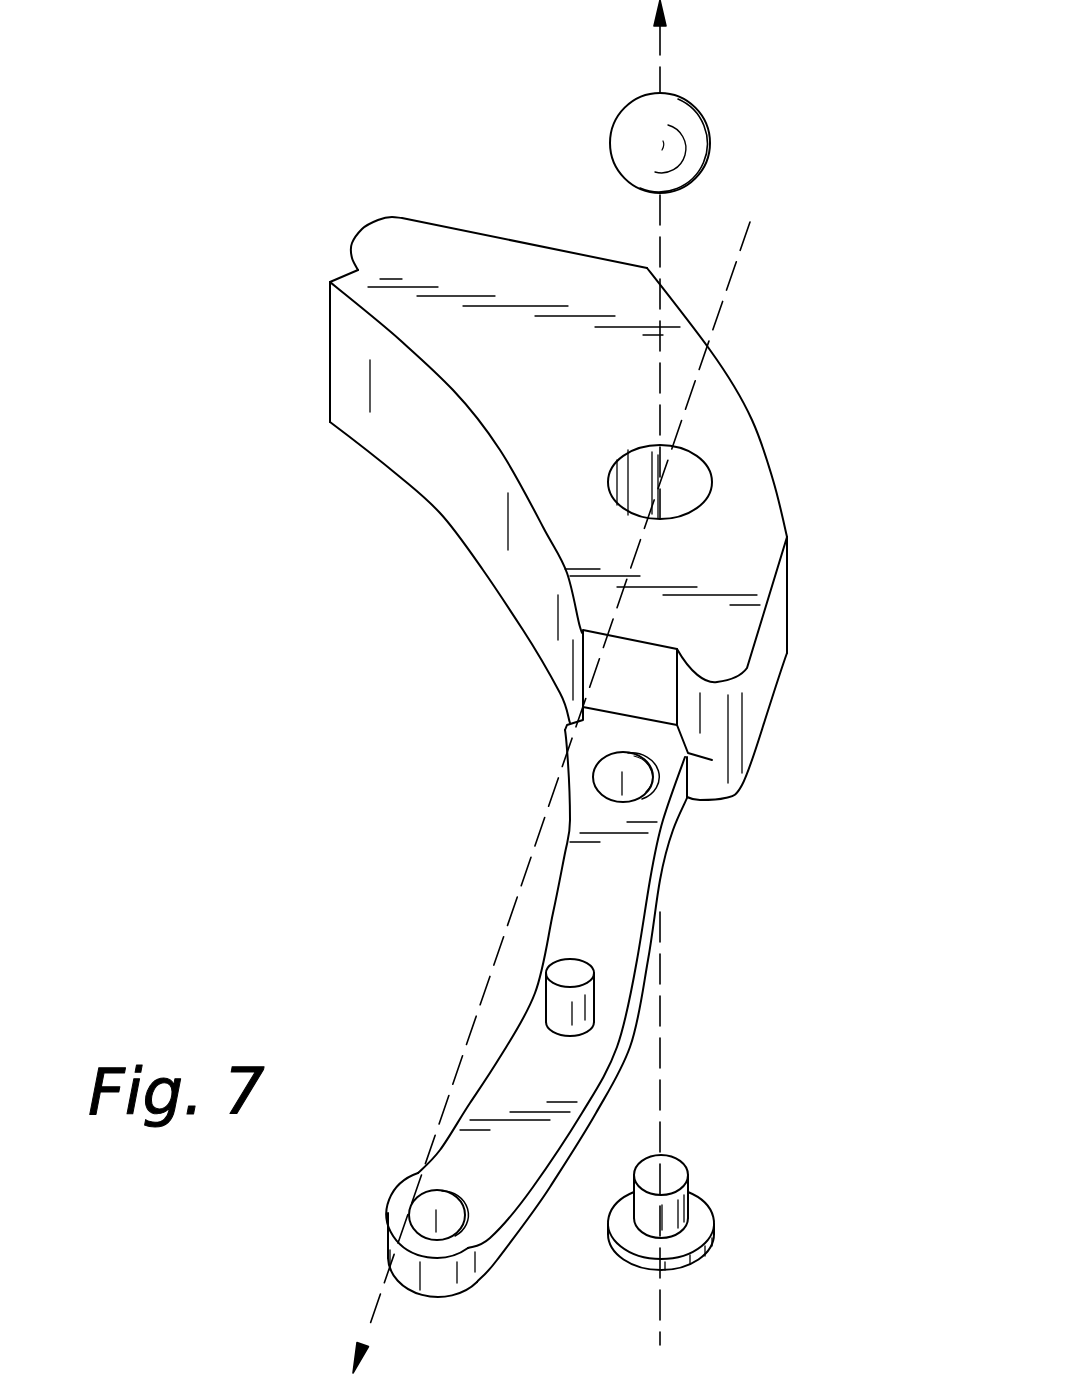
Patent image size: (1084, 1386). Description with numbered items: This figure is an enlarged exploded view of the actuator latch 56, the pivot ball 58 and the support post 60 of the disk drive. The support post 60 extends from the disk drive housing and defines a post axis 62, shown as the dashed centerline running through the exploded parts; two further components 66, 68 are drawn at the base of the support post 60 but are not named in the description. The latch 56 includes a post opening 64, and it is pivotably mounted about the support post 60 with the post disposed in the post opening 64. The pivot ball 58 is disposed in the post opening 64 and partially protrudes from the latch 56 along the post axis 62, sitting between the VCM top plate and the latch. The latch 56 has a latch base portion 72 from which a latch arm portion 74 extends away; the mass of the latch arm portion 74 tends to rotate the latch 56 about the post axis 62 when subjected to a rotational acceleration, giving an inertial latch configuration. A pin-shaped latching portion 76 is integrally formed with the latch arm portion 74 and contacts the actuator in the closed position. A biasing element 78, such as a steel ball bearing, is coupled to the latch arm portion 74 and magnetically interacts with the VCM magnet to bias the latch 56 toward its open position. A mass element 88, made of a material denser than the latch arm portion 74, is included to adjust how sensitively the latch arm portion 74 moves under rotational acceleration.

The actuator latch 56 is at (150, 362).
The pivot ball 58 is at (610, 142).
The support post 60 is at (780, 1176).
The post axis 62 is at (657, 47).
The post opening 64 is at (722, 460).
The pin 66 is at (683, 1173).
The flange 68 is at (714, 1233).
The latch base portion 72 is at (445, 230).
The latch arm portion 74 is at (625, 898).
The latching portion 76 is at (568, 972).
The biasing element 78 is at (603, 775).
The mass element 88 is at (427, 1210).